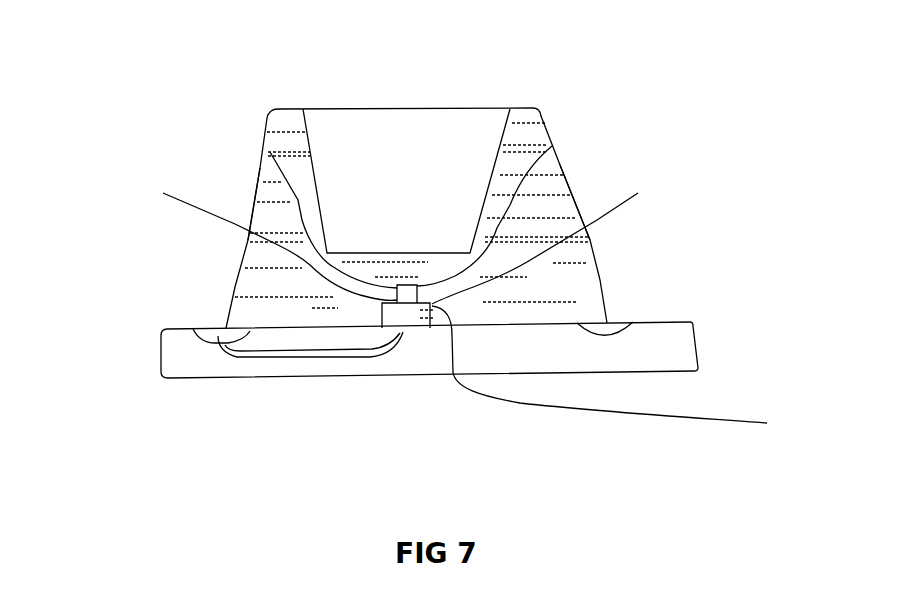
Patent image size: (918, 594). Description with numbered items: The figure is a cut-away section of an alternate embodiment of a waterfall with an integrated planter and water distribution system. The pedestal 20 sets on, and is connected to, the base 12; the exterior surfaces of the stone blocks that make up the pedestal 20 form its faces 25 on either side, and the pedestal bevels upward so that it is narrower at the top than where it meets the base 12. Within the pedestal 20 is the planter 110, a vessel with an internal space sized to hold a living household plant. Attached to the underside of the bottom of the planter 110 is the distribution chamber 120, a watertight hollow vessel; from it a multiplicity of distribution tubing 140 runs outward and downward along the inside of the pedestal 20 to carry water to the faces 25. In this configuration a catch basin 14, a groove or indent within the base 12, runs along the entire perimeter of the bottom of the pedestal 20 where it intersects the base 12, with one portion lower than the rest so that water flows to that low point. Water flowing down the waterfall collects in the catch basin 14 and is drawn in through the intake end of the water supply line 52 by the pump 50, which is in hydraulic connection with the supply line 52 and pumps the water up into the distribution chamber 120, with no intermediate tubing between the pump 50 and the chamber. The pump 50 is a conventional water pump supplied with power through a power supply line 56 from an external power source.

The base 12 is at (665, 342).
The catch basin 14 is at (217, 336).
The pedestal 20 is at (527, 133).
The face 25 is at (563, 170).
The pump 50 is at (432, 304).
The water supply line 52 is at (272, 356).
The power supply line 56 is at (587, 409).
The planter 110 is at (416, 158).
The distribution chamber 120 is at (406, 286).
The distribution tubing 140 is at (638, 184).